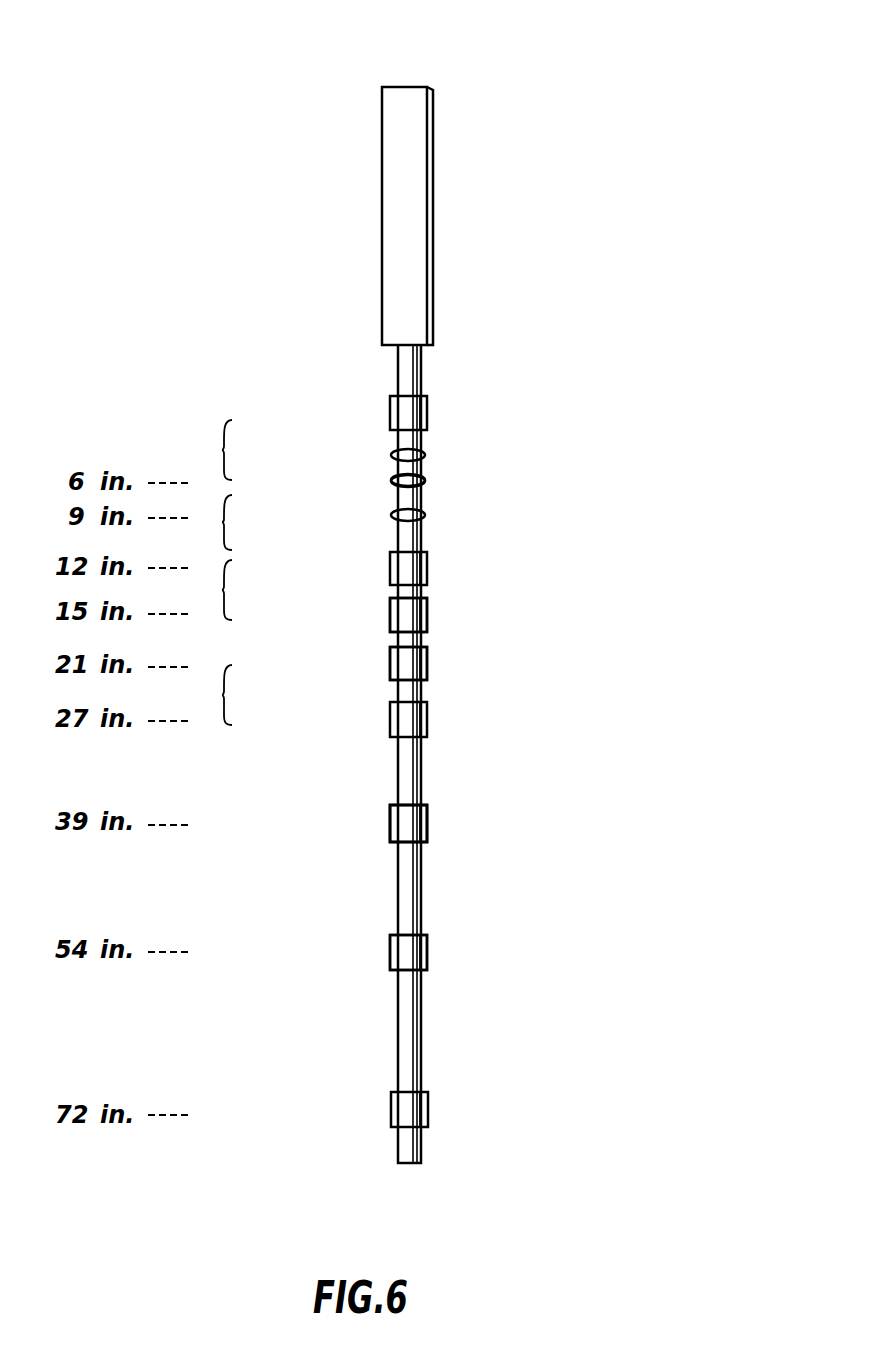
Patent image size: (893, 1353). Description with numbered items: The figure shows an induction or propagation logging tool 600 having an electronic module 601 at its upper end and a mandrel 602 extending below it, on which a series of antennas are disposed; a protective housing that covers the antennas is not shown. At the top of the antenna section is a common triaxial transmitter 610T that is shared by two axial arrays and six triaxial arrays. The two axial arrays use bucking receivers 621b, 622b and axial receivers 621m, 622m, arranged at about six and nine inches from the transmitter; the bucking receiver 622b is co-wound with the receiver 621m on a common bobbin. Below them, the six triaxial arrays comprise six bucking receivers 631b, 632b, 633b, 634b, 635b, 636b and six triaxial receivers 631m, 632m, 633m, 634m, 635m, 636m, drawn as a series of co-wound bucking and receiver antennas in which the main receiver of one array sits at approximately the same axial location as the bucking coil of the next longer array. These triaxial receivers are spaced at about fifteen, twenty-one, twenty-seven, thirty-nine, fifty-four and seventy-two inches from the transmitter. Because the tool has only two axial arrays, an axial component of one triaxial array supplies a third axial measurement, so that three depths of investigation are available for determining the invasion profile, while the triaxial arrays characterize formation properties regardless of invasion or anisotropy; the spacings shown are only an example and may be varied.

The induction or propagation tool 600 is at (282, 78).
The electronic module 601 is at (436, 245).
The mandrel 602 is at (397, 373).
The common triaxial transmitter 610T is at (427, 408).
The bucking receiver 621b is at (392, 453).
The axial receiver 621m is at (392, 478).
The bucking receiver 622b is at (393, 484).
The axial receiver 622m is at (392, 517).
The bucking receiver 631b is at (405, 572).
The triaxial receiver 631m is at (402, 612).
The bucking receiver 632b is at (555, 668).
The triaxial receiver 632m is at (413, 660).
The bucking receiver 633b is at (405, 672).
The triaxial receiver 633m is at (405, 713).
The bucking receiver 634b is at (577, 817).
The triaxial receiver 634m is at (415, 815).
The bucking receiver 635b is at (400, 830).
The triaxial receiver 635m is at (400, 945).
The bucking receiver 636b is at (577, 1113).
The triaxial receiver 636m is at (420, 1108).